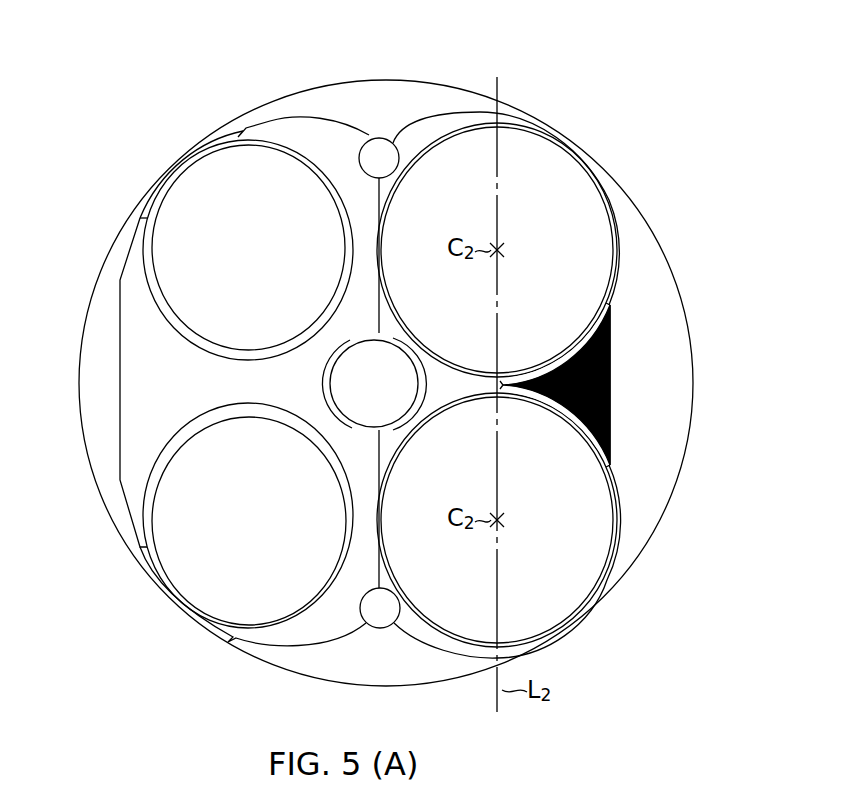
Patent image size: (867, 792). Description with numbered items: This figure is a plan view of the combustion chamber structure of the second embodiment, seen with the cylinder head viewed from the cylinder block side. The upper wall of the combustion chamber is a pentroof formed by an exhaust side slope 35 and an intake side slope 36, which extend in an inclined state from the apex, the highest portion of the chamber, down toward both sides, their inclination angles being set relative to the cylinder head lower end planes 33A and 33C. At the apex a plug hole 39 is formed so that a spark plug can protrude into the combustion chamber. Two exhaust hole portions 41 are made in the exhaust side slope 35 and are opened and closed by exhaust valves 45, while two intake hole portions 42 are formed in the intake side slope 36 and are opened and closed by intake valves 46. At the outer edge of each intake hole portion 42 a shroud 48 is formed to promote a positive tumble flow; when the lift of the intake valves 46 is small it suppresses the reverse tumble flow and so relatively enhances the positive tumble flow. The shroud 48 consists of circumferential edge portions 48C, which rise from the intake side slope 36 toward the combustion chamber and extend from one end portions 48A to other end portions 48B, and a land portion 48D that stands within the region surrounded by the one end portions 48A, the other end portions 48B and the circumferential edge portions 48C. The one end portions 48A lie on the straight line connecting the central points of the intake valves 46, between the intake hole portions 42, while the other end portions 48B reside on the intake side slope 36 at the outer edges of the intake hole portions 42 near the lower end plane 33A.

The cylinder head lower end plane 33A is at (660, 272).
The cylinder head lower end plane 33C is at (100, 323).
The exhaust side slope 35 is at (340, 133).
The intake side slope 36 is at (417, 132).
The plug hole 39 is at (371, 426).
The exhaust hole portion 41 is at (180, 338).
The intake hole portion 42 is at (420, 153).
The exhaust valve 45 is at (182, 204).
The intake valve 46 is at (585, 204).
The shroud 48 is at (618, 371).
The one end portion 48A is at (500, 385).
The other end portion 48B is at (610, 304).
The circumferential edge portion 48C is at (560, 362).
The land portion 48D is at (600, 407).